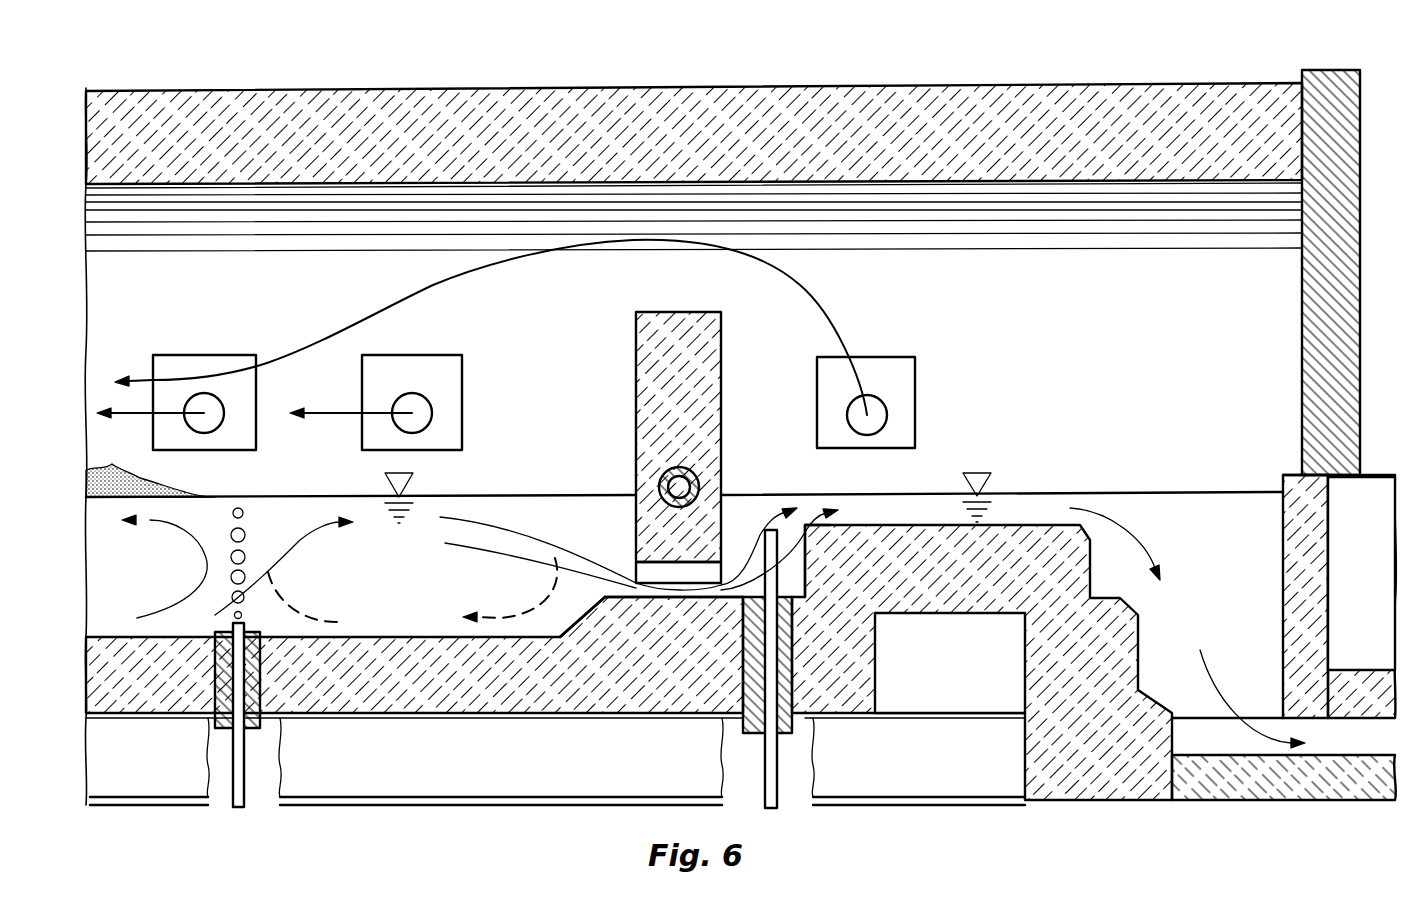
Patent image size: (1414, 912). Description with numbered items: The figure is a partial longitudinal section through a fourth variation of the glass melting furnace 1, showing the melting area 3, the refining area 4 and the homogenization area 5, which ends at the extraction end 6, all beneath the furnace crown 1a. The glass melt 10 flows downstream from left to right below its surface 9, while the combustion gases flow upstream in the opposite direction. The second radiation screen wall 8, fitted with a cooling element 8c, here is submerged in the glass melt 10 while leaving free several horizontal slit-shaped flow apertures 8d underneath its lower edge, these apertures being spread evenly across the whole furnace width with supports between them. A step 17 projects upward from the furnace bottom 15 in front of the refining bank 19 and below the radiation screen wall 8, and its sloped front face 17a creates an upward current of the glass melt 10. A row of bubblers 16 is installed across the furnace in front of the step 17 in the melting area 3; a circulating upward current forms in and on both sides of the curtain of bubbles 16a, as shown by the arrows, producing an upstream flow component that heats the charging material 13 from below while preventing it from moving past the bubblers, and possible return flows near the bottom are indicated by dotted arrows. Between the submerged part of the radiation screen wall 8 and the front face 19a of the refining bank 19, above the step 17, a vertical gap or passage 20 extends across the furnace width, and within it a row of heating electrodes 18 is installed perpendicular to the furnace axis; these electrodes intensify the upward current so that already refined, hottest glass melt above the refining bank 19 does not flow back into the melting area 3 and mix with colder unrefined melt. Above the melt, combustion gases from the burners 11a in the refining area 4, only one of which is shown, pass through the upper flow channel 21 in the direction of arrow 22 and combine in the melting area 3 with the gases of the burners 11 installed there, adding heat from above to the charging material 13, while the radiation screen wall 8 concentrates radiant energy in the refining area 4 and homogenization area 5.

The glass melting furnace 1 is at (1008, 76).
The furnace crown 1a is at (683, 105).
The melting area 3 is at (313, 304).
The refining area 4 is at (916, 318).
The homogenization area 5 is at (1187, 324).
The extraction end 6 is at (1380, 450).
The second radiation screen wall 8 is at (640, 387).
The cooling element 8c is at (660, 480).
The horizontal slit-shaped flow apertures 8d is at (619, 552).
The surface of the glass melt 9 is at (486, 484).
The glass melt 10 is at (392, 594).
The burners 11 is at (218, 405).
The burners in the refining area 11a is at (878, 418).
The charging material 13 is at (150, 515).
The furnace bottom 15 is at (408, 628).
The bubblers 16 is at (236, 762).
The curtain of bubbles 16a is at (250, 476).
The step 17 is at (635, 620).
The sloped front face of the step 17a is at (556, 624).
The heating electrodes 18 is at (773, 763).
The refining bank 19 is at (1022, 500).
The front face of the refining bank 19a is at (826, 562).
The vertical gap or passage 20 is at (739, 512).
The upper flow channel 21 is at (670, 275).
The arrow indicating combustion gas flow direction 22 is at (818, 310).